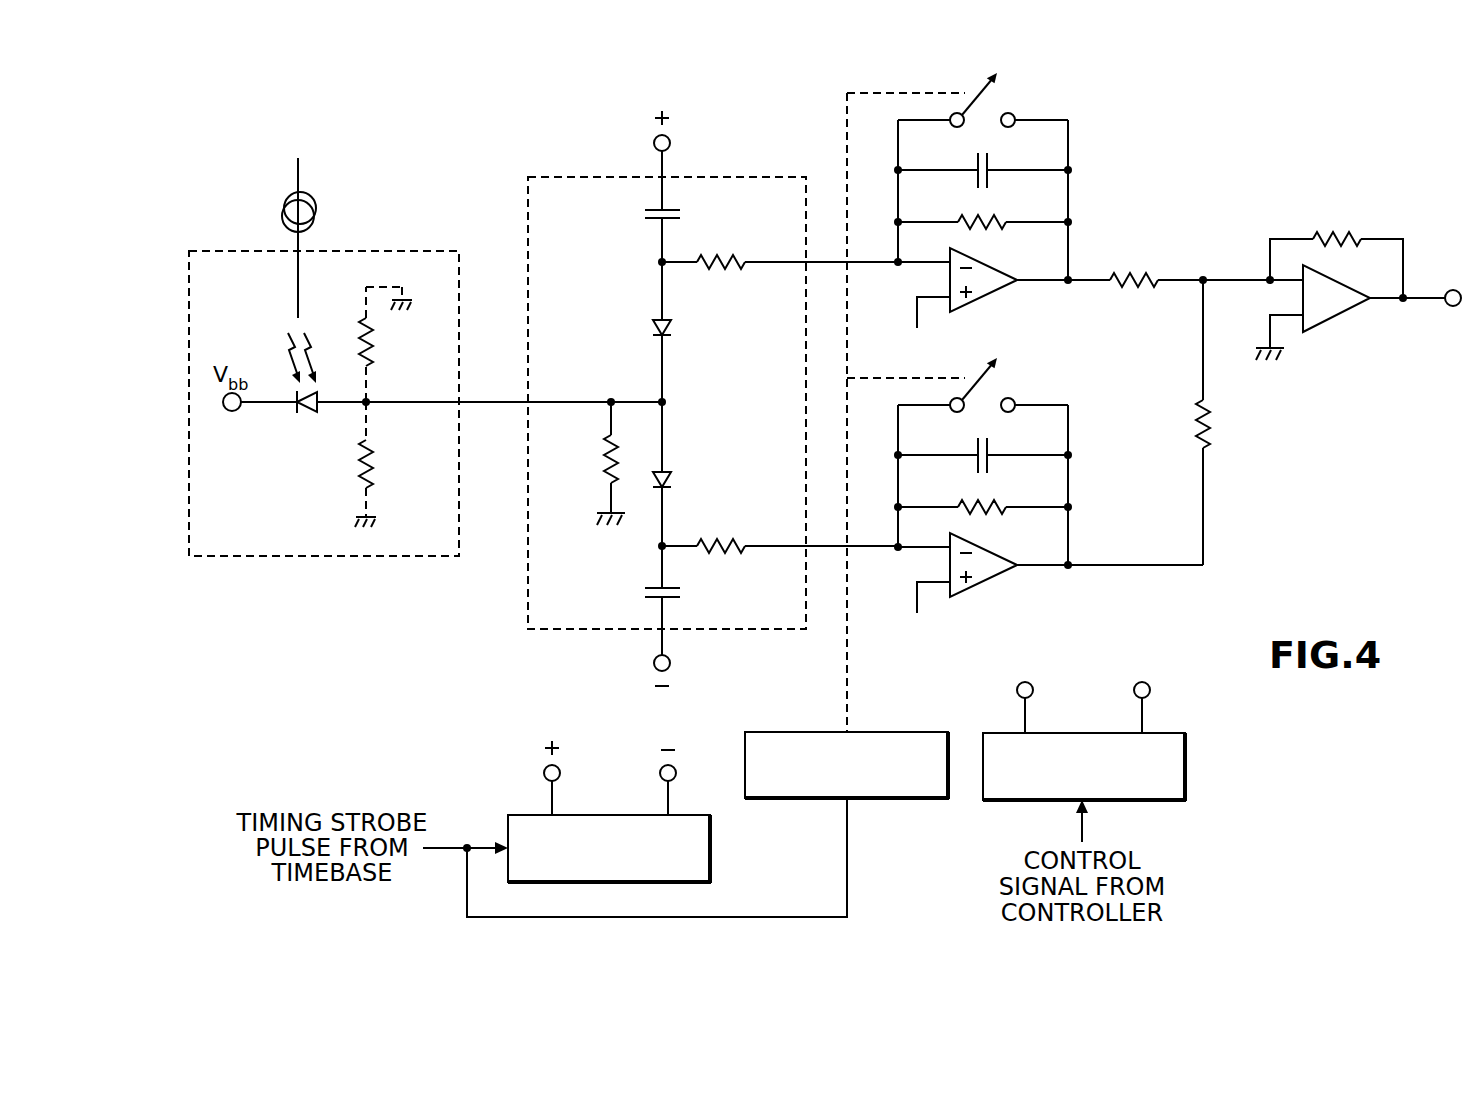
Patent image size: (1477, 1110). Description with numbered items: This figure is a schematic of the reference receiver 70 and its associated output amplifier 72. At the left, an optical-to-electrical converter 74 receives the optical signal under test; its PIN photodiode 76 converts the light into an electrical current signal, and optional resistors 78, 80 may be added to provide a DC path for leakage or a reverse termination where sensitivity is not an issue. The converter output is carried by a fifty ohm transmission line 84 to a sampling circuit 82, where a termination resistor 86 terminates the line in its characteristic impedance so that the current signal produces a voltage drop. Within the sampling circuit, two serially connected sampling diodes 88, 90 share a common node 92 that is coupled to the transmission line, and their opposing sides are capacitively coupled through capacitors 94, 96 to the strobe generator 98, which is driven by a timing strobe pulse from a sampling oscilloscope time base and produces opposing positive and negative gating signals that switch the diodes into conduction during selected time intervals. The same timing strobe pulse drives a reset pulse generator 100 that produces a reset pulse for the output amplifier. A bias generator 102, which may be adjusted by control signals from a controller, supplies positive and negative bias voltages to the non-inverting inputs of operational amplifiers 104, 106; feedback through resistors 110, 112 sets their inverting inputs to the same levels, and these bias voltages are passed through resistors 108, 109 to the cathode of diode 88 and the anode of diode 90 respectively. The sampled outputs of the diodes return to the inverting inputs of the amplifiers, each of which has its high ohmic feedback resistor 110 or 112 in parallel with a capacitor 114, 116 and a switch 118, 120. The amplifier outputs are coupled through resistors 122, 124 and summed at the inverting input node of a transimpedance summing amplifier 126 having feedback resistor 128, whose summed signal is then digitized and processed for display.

The reference receiver 70 is at (524, 145).
The output amplifier 72 is at (1192, 148).
The optical-to-electrical (O/E) converter 74 is at (419, 251).
The PIN photodiode 76 is at (303, 412).
The resistor 78 is at (373, 462).
The resistor 80 is at (373, 345).
The sampling circuit 82 is at (767, 177).
The transmission line 84 is at (495, 400).
The termination resistor 86 is at (604, 455).
The sampling diode 88 is at (673, 480).
The sampling diode 90 is at (673, 328).
The common node 92 is at (668, 402).
The capacitor 94 is at (643, 593).
The capacitor 96 is at (643, 215).
The strobe generator 98 is at (610, 815).
The reset pulse generator 100 is at (799, 730).
The bias generator 102 is at (1187, 765).
The operational amplifier 104 is at (987, 588).
The operational amplifier 106 is at (987, 303).
The resistor 108 is at (718, 562).
The resistor 109 is at (723, 252).
The feedback resistor 110 is at (997, 514).
The feedback resistor 112 is at (997, 229).
The capacitor 114 is at (996, 466).
The capacitor 116 is at (996, 181).
The switch 118 is at (1002, 370).
The switch 120 is at (1002, 85).
The resistor 122 is at (1182, 417).
The resistor 124 is at (1133, 270).
The summing amplifier 126 is at (1337, 321).
The feedback resistor 128 is at (1337, 230).